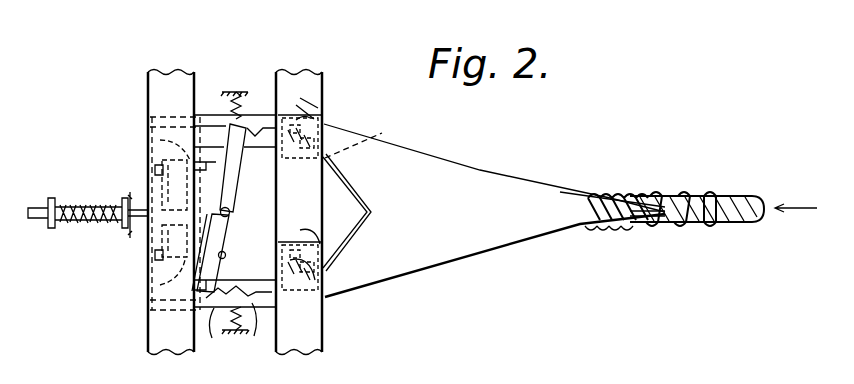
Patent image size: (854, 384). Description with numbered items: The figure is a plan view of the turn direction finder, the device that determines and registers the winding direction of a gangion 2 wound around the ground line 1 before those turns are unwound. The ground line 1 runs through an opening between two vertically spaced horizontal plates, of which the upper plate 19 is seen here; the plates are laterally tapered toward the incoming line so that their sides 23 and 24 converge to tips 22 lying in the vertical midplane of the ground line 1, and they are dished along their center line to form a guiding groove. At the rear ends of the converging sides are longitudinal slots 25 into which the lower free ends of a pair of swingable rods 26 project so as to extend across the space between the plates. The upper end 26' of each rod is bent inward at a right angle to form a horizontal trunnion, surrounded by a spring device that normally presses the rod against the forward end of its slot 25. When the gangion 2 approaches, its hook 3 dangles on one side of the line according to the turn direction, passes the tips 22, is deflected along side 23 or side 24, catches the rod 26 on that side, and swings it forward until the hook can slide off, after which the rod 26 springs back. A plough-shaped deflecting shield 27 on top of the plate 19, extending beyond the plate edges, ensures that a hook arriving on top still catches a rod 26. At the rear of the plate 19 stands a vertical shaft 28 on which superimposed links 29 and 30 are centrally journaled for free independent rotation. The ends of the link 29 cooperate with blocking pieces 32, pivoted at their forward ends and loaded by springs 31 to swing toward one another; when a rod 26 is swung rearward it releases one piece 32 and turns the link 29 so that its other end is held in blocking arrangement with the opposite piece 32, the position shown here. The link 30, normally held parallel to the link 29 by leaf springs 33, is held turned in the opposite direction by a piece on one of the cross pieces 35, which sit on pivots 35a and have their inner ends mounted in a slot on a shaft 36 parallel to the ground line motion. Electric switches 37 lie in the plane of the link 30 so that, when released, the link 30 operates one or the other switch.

The ground line 1 is at (743, 197).
The gangion 2 is at (665, 193).
The hook 3 is at (325, 290).
The horizontal plate 19 is at (478, 190).
The tip 22 is at (648, 215).
The side 23 is at (548, 185).
The side 24 is at (532, 242).
The longitudinal slot 25 is at (212, 310).
The swingable rod 26 is at (324, 193).
The upper end of rod 26' is at (367, 136).
The plough-shaped deflecting shield 27 is at (356, 193).
The vertical shaft 28 is at (230, 211).
The link 29 is at (236, 160).
The link 30 is at (226, 256).
The spring 31 is at (244, 107).
The blocking piece 32 is at (262, 124).
The leaf spring 33 is at (213, 208).
The cross piece 35 is at (158, 252).
The pivot 35a is at (180, 262).
The shaft 36 is at (42, 218).
The electric switch 37 is at (158, 270).